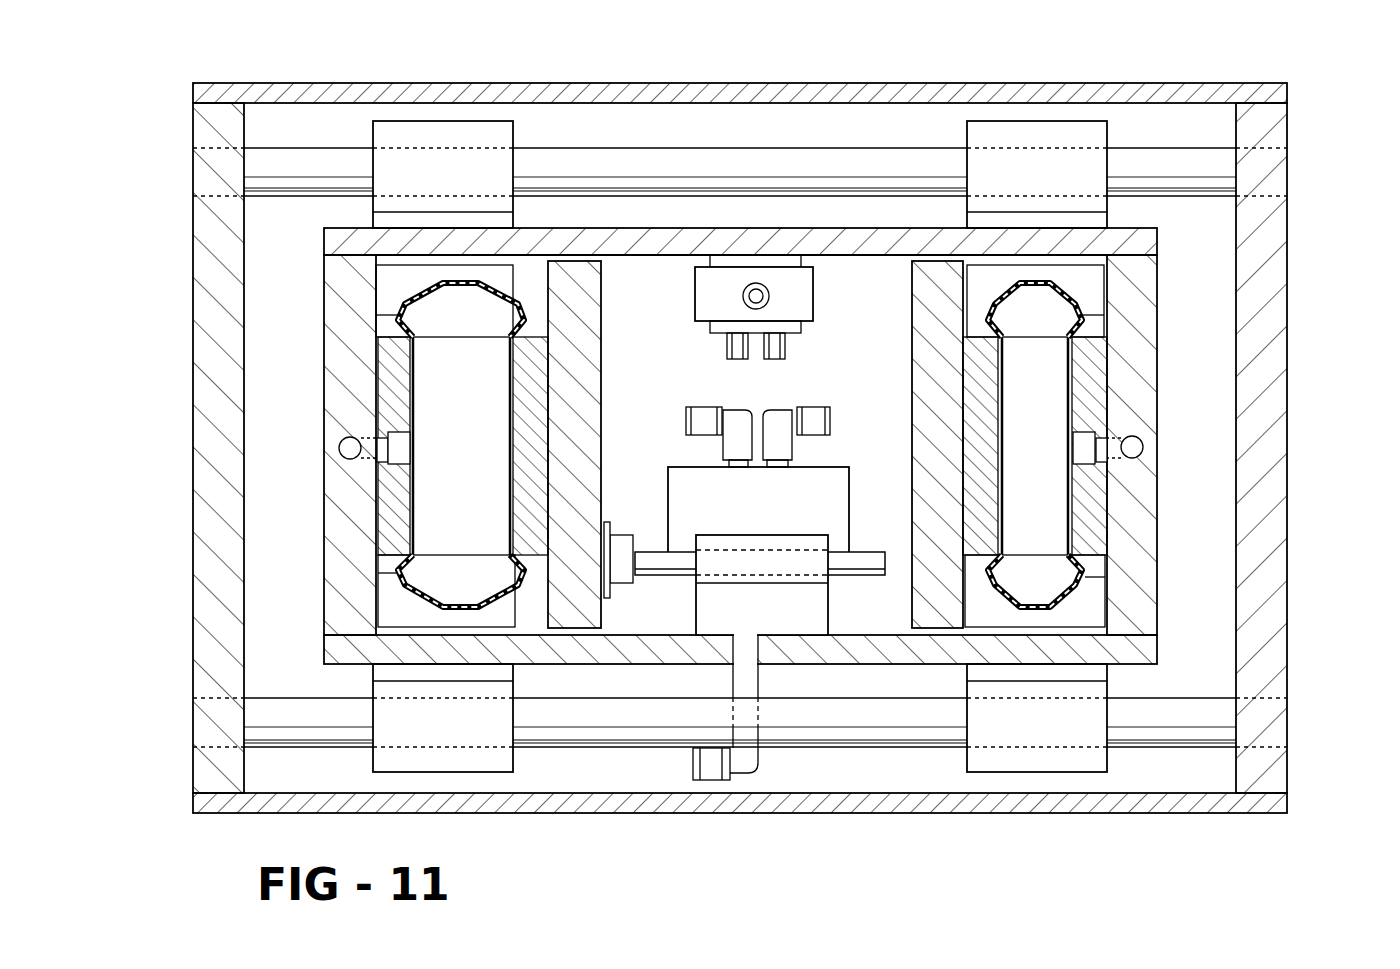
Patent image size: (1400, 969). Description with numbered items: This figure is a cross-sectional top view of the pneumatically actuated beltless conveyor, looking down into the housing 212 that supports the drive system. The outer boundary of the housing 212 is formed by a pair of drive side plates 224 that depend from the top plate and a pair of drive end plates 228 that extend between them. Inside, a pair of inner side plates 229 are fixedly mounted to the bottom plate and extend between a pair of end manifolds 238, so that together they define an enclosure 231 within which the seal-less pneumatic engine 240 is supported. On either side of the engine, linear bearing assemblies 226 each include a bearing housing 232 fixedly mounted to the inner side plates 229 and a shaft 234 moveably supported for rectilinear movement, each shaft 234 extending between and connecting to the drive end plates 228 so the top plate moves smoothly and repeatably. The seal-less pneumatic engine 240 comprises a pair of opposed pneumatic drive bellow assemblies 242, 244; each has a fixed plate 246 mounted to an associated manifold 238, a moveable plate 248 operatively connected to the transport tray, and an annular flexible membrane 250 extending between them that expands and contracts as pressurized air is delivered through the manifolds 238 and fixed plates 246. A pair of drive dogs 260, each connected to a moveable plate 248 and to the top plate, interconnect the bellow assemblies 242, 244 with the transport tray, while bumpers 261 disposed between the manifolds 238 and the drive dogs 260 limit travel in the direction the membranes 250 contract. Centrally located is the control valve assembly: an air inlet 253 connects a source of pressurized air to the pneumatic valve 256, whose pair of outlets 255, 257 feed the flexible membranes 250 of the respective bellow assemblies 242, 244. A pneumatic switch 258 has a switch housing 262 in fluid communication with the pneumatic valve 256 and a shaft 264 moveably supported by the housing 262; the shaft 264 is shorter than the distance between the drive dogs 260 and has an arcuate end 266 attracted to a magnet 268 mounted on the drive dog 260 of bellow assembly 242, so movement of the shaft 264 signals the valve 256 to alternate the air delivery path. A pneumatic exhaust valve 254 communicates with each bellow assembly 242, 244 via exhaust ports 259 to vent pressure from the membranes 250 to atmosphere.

The housing 212 is at (1252, 66).
The drive side plates 224 is at (820, 88).
The linear bearing assembly 226 is at (412, 118).
The drive end plates 228 is at (205, 245).
The inner side plates 229 is at (668, 236).
The enclosure 231 is at (856, 258).
The bearing housing 232 is at (470, 128).
The shaft 234 is at (802, 163).
The end manifolds 238 is at (343, 316).
The seal-less pneumatic engine 240 is at (312, 410).
The pneumatic drive bellow assembly 242 is at (403, 505).
The pneumatic drive bellow assembly 244 is at (1106, 505).
The fixed plate 246 is at (415, 345).
The moveable plate 248 is at (520, 490).
The flexible membrane 250 is at (432, 590).
The air inlet 253 is at (713, 780).
The pneumatic exhaust valve 254 is at (756, 270).
The outlet 255 is at (705, 410).
The pneumatic valve 256 is at (822, 470).
The outlet 257 is at (815, 408).
The pneumatic switch 258 is at (768, 594).
The exhaust ports 259 is at (770, 350).
The drive dogs 260 is at (594, 300).
The bumpers 261 is at (513, 278).
The switch housing 262 is at (662, 458).
The shaft 264 is at (683, 553).
The arcuate end 266 is at (606, 535).
The magnet 268 is at (624, 580).